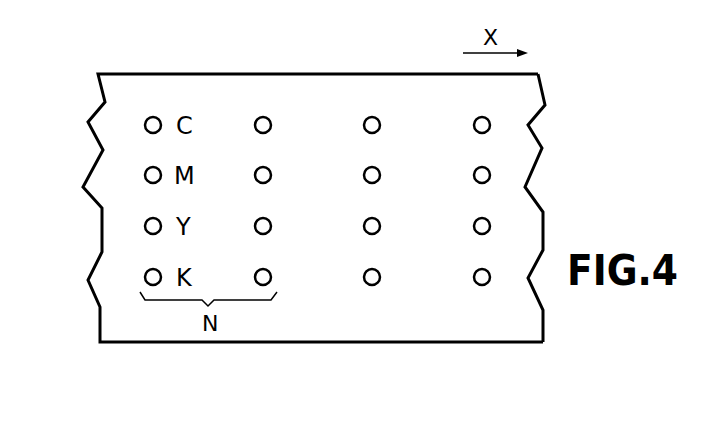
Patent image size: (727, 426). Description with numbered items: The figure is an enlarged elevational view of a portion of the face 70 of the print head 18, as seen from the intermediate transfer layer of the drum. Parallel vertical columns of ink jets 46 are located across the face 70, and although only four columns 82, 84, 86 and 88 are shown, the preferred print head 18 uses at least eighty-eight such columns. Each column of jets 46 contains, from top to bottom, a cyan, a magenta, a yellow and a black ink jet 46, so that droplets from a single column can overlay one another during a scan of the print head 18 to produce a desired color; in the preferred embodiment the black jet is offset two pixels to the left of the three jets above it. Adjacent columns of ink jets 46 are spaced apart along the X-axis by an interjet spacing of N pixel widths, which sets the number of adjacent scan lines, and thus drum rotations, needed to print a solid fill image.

The print head 18 is at (352, 171).
The ink jets 46 is at (267, 214).
The face 70 is at (530, 150).
The column 82 is at (153, 318).
The column 84 is at (263, 318).
The column 86 is at (373, 311).
The column 88 is at (482, 311).